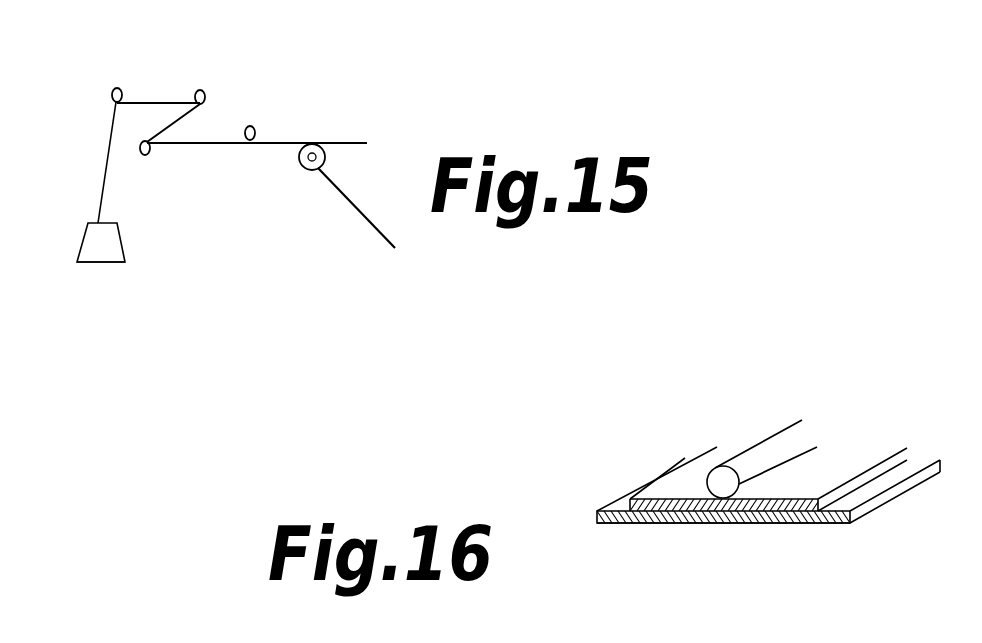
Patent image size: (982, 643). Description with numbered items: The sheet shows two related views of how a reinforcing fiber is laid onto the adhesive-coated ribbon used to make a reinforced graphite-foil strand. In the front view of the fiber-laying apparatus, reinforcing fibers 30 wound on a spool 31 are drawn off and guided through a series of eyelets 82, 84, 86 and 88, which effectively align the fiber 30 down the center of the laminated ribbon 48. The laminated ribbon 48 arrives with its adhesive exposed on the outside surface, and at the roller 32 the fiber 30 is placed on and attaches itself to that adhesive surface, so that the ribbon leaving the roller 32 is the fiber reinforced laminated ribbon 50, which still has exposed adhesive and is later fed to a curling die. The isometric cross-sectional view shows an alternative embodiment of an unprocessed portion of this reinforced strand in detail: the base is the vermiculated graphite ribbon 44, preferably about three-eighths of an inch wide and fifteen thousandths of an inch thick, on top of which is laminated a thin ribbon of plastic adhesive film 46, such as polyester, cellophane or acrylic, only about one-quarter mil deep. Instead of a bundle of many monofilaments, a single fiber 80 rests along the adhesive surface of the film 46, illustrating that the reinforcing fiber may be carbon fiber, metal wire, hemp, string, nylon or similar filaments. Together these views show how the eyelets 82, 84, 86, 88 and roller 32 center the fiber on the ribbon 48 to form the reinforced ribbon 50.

In FIG. 15, the eyelet 82 is at (114, 88).
In FIG. 15, the eyelet 84 is at (196, 90).
In FIG. 15, the eyelet 86 is at (147, 156).
In FIG. 15, the eyelet 88 is at (250, 125).
In FIG. 15, the laminated ribbon 48 is at (337, 197).
In FIG. 15, the roller 32 is at (306, 146).
In FIG. 15, the reinforcing fiber 30 is at (108, 180).
In FIG. 15, the spool 31 is at (108, 263).
In FIG. 16, the single fiber 80 is at (772, 448).
In FIG. 16, the vermiculated graphite ribbon 44 is at (650, 523).
In FIG. 16, the plastic adhesive film 46 is at (792, 523).
In FIG. 16, the fiber reinforced laminated ribbon 50 is at (741, 529).